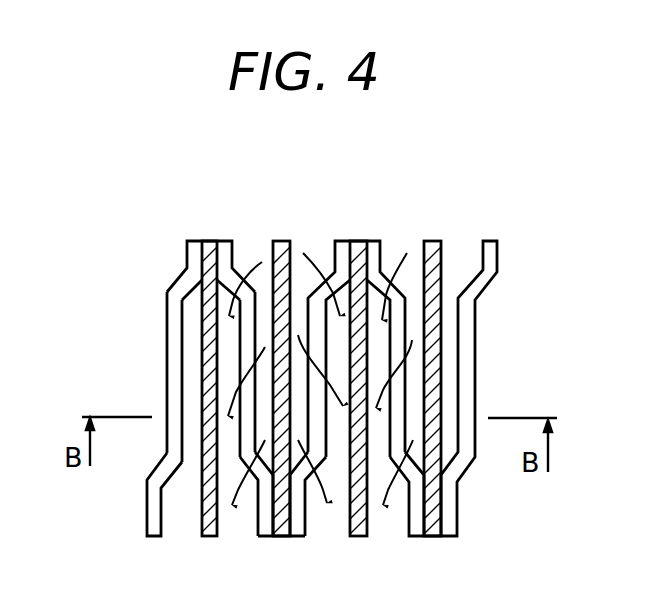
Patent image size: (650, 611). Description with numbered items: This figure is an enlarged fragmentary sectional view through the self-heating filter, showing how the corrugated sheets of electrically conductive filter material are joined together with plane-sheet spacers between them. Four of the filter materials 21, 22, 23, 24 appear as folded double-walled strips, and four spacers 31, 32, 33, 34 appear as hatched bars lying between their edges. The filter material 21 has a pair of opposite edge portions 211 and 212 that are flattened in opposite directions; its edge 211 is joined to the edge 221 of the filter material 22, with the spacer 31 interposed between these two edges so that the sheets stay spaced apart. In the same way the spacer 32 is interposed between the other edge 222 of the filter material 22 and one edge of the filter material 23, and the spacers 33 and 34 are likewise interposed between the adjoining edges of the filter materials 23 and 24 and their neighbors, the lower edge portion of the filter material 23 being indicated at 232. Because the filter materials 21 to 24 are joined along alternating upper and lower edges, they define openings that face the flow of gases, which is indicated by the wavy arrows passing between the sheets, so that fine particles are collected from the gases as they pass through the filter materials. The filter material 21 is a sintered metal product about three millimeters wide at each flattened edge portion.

The filter material 21 is at (151, 538).
The edge of filter material 211 is at (187, 263).
The edge portion of filter material 212 is at (144, 510).
The filter material 22 is at (260, 538).
The edge of filter material 221 is at (228, 255).
The edge of filter material 222 is at (254, 513).
The filter material 23 is at (299, 528).
The lower end portion of third dielectric tube 232 is at (307, 508).
The filter material 24 is at (416, 522).
The spacer 31 is at (207, 247).
The spacer 32 is at (284, 250).
The spacer 33 is at (357, 250).
The spacer 34 is at (431, 250).